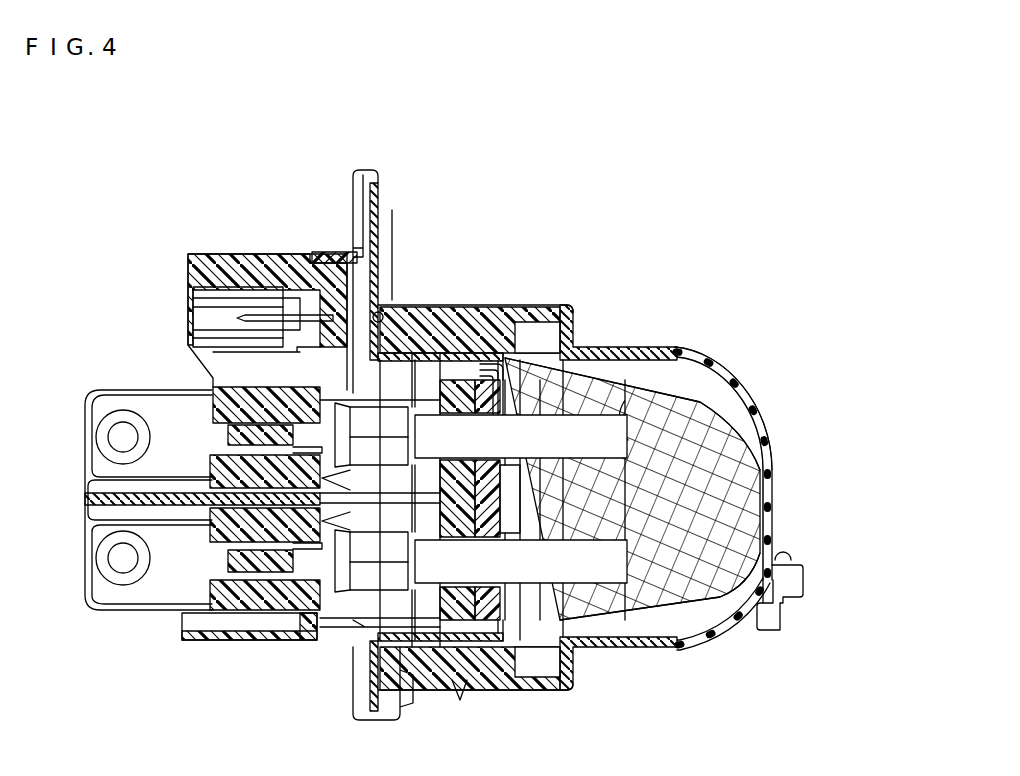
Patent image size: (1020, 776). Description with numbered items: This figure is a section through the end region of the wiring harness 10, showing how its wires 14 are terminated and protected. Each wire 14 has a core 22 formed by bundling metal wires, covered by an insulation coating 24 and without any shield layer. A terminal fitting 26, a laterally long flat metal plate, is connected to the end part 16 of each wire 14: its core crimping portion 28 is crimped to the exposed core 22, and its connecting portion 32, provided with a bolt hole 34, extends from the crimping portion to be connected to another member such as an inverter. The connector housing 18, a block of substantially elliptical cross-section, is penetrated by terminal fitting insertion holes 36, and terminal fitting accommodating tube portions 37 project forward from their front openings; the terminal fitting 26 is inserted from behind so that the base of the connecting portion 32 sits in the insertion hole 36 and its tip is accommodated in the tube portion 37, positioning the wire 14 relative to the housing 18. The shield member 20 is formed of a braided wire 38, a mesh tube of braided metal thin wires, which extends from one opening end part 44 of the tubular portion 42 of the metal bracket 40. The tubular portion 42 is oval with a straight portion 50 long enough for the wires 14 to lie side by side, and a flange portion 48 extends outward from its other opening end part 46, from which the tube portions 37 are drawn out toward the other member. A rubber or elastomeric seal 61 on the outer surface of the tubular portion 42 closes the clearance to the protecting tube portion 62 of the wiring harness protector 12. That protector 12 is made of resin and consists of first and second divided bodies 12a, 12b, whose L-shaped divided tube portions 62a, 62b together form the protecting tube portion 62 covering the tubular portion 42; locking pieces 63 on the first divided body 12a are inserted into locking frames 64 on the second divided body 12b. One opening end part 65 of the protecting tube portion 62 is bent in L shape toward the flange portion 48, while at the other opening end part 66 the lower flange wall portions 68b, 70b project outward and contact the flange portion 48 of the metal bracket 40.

The wiring harness 10 is at (441, 114).
The wiring harness protector 12 is at (702, 656).
The first divided body 12a is at (762, 429).
The second divided body 12b is at (761, 412).
The wire 14 is at (541, 393).
The end part 16 is at (472, 146).
The connector housing 18 is at (237, 236).
The shield member 20 is at (623, 378).
The core 22 is at (414, 398).
The insulation coating 24 is at (570, 566).
The terminal fitting 26 is at (344, 392).
The core crimping portion 28 is at (366, 425).
The connecting portion 32 is at (108, 423).
The bolt hole 34 is at (135, 427).
The terminal fitting insertion hole 36 is at (297, 423).
The terminal fitting accommodating tube portion 37 is at (172, 416).
The braided wire 38 is at (698, 440).
The metal bracket 40 is at (388, 186).
The tubular portion 42 is at (412, 352).
The one opening end part 44 is at (542, 596).
The other opening end part 46 is at (360, 624).
The flange portion 48 is at (374, 266).
The straight portion 50 is at (520, 500).
The seal 61 is at (484, 332).
The protecting tube portion 62 is at (686, 419).
The divided tube portion 62a is at (672, 500).
The divided tube portion 62b is at (733, 297).
The locking piece 63 is at (785, 556).
The locking frame 64 is at (793, 583).
The one opening end part 65 is at (645, 588).
The other opening end part 66 is at (378, 314).
The lower flange wall portion 68b is at (360, 703).
The lower flange wall portion 70b is at (404, 203).